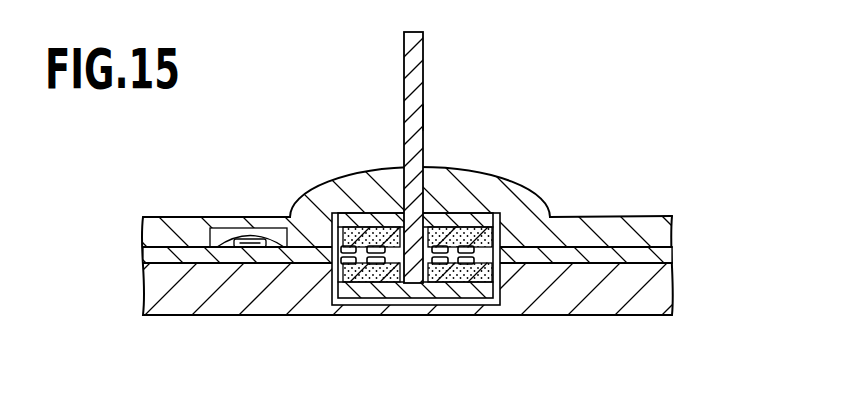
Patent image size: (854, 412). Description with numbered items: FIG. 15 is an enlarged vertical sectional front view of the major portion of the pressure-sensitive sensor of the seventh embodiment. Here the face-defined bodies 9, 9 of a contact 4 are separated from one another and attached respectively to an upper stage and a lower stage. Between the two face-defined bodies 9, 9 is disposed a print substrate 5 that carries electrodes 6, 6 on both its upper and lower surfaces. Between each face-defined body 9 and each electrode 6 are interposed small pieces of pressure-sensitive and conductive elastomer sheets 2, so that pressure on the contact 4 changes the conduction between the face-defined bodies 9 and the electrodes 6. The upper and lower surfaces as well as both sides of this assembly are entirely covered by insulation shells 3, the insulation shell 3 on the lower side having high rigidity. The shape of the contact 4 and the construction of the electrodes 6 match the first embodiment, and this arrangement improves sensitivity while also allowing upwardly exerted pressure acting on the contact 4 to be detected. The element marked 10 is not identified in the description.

The pressure-sensitive and conductive elastomer sheets 2 is at (340, 229).
The insulation shell 3 is at (660, 223).
The contact 4 is at (424, 120).
The print substrate 5 is at (662, 252).
The electrodes 6 is at (338, 254).
The face-defined bodies 9 is at (490, 213).
The contact pin 10 is at (423, 70).